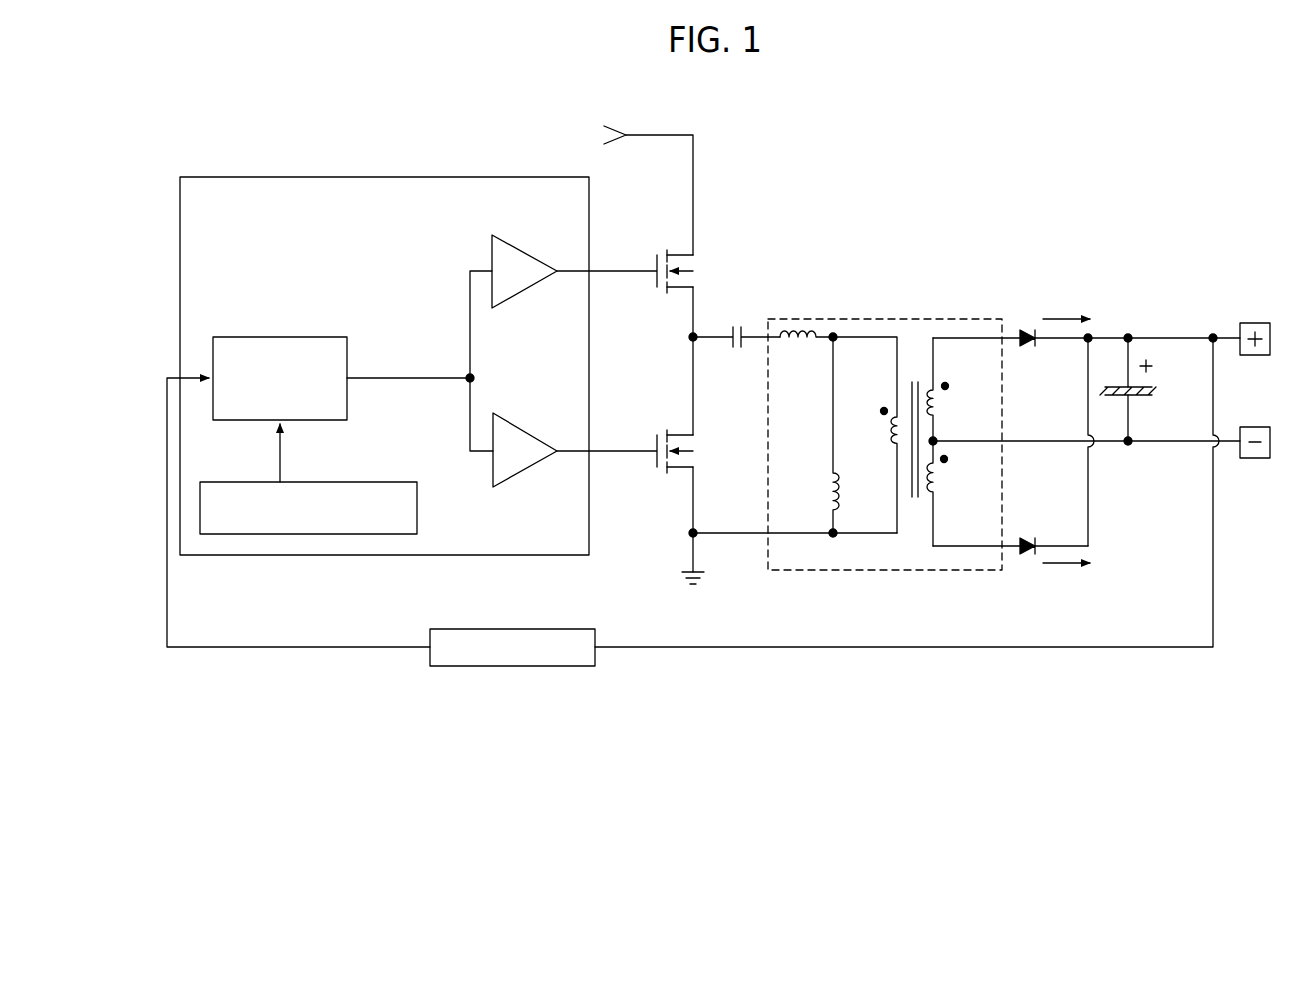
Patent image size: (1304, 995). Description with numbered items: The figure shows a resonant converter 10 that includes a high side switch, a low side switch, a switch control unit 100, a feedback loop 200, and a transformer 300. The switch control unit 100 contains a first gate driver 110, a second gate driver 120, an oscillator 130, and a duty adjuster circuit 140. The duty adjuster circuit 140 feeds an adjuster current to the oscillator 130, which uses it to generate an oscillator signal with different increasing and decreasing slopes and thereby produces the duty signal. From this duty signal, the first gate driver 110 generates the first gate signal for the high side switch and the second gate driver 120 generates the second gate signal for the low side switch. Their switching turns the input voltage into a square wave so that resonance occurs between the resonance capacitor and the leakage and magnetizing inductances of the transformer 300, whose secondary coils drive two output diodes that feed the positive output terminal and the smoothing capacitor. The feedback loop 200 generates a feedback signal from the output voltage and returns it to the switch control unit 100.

The resonant converter 10 is at (1084, 172).
The switch control unit 100 is at (222, 177).
The first gate driver 110 is at (534, 252).
The second gate driver 120 is at (533, 432).
The oscillator 130 is at (300, 337).
The duty adjuster circuit 140 is at (417, 518).
The feedback loop 200 is at (500, 629).
The transformer 300 is at (943, 319).